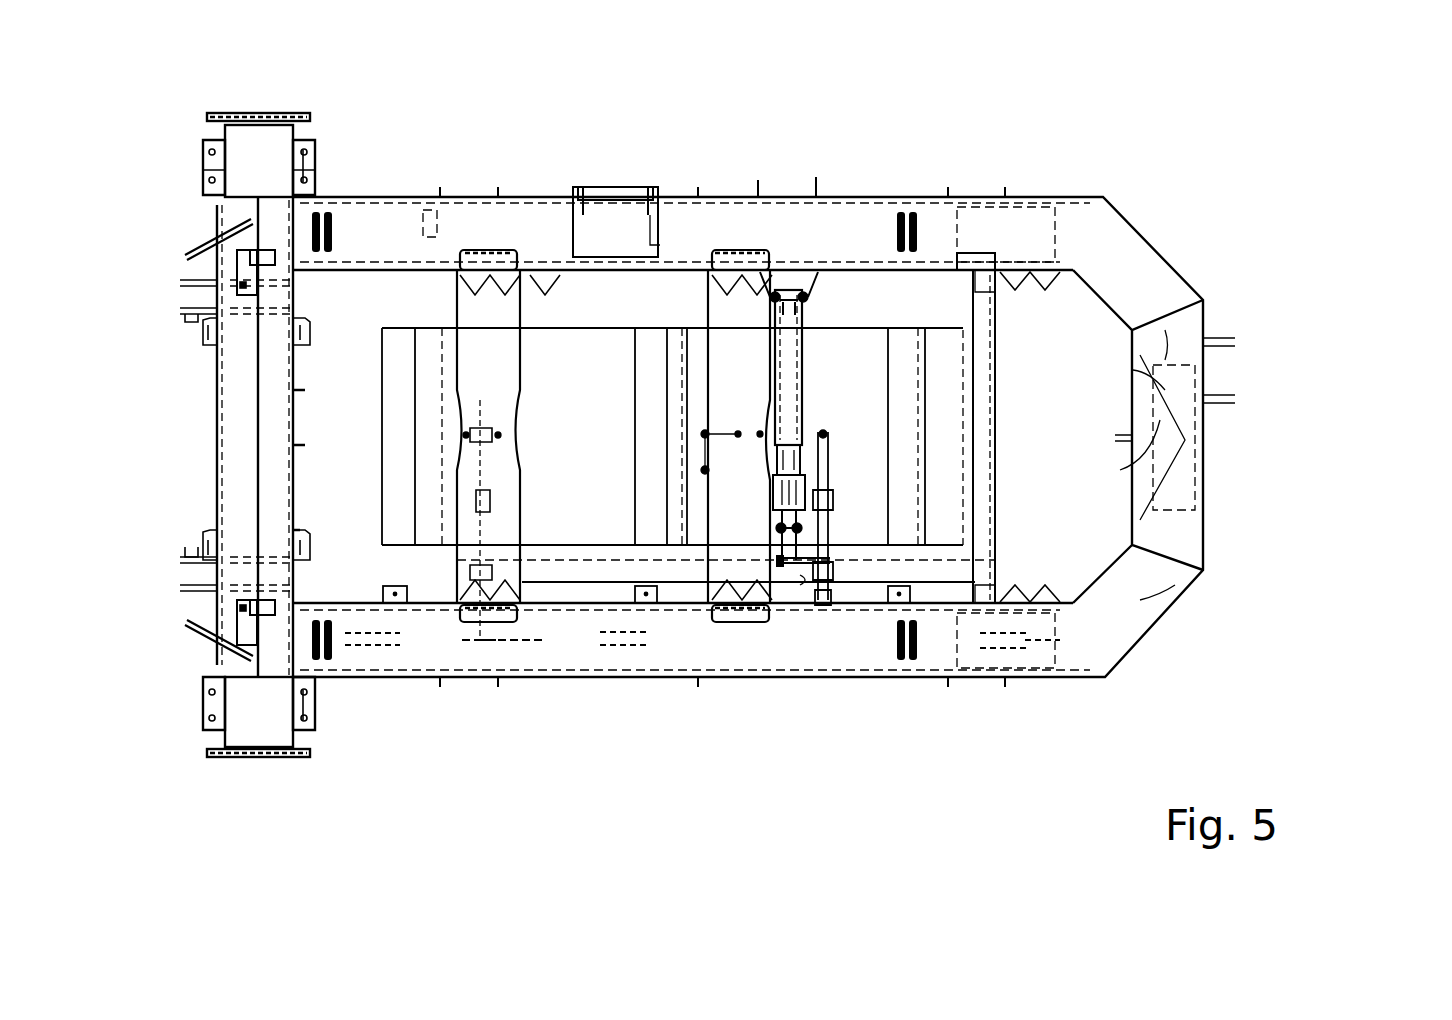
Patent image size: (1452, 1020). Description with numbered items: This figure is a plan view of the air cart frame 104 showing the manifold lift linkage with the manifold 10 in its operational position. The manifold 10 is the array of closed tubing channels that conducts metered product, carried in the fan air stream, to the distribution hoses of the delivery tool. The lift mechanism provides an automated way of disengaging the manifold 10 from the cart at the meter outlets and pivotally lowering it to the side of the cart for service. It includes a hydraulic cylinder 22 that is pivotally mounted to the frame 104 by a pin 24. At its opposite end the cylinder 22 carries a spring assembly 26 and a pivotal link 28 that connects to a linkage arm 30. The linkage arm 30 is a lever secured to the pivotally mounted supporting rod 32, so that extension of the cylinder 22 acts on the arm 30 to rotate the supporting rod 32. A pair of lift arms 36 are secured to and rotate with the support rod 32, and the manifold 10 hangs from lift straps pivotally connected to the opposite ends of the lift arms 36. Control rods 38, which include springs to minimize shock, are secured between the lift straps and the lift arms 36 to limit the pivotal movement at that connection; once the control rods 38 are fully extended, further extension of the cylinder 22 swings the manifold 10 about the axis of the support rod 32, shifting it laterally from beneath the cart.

The manifold 10 is at (597, 445).
The frame 104 is at (522, 218).
The hydraulic cylinder 22 is at (790, 387).
The pin 24 is at (802, 287).
The spring assembly 26 is at (775, 503).
The pivotal link 28 is at (797, 528).
The linkage arm 30 is at (800, 556).
The supporting rod 32 is at (612, 572).
The lift arms 36 is at (482, 522).
The control rods 38 is at (823, 483).